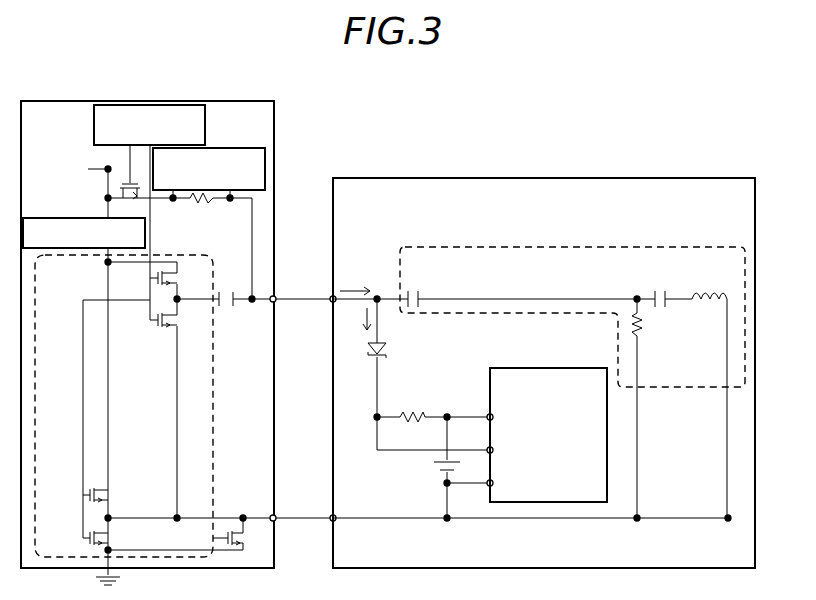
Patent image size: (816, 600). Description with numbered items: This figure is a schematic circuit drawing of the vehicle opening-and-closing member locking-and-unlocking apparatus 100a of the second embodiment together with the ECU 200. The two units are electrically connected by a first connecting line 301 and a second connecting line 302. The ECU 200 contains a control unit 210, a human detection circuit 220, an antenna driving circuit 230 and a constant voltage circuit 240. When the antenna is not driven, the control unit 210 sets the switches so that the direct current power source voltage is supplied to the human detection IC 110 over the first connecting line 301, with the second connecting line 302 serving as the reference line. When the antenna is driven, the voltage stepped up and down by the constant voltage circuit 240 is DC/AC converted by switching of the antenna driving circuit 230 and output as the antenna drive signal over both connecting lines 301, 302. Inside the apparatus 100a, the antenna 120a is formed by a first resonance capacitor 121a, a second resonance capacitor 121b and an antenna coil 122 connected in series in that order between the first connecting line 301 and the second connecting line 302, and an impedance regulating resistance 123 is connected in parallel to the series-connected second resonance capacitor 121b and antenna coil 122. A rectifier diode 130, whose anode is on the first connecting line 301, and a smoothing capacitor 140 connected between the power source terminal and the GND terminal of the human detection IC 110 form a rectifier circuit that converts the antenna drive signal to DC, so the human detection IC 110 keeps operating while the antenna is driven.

The ECU 200 is at (233, 100).
The control unit 210 is at (93, 134).
The human detection circuit 220 is at (241, 148).
The constant voltage circuit 240 is at (85, 217).
The antenna driving circuit 230 is at (214, 356).
The first connecting line 301 is at (293, 297).
The second connecting line 302 is at (293, 516).
The vehicle opening-and-closing member locking-and-unlocking apparatus 100a is at (713, 178).
The antenna 120a is at (677, 247).
The first resonance capacitor 121a is at (419, 296).
The second resonance capacitor 121b is at (653, 296).
The antenna coil 122 is at (692, 295).
The impedance regulating resistance 123 is at (645, 325).
The human detection IC 110 is at (560, 374).
The rectifier diode 130 is at (366, 356).
The smoothing capacitor 140 is at (433, 466).